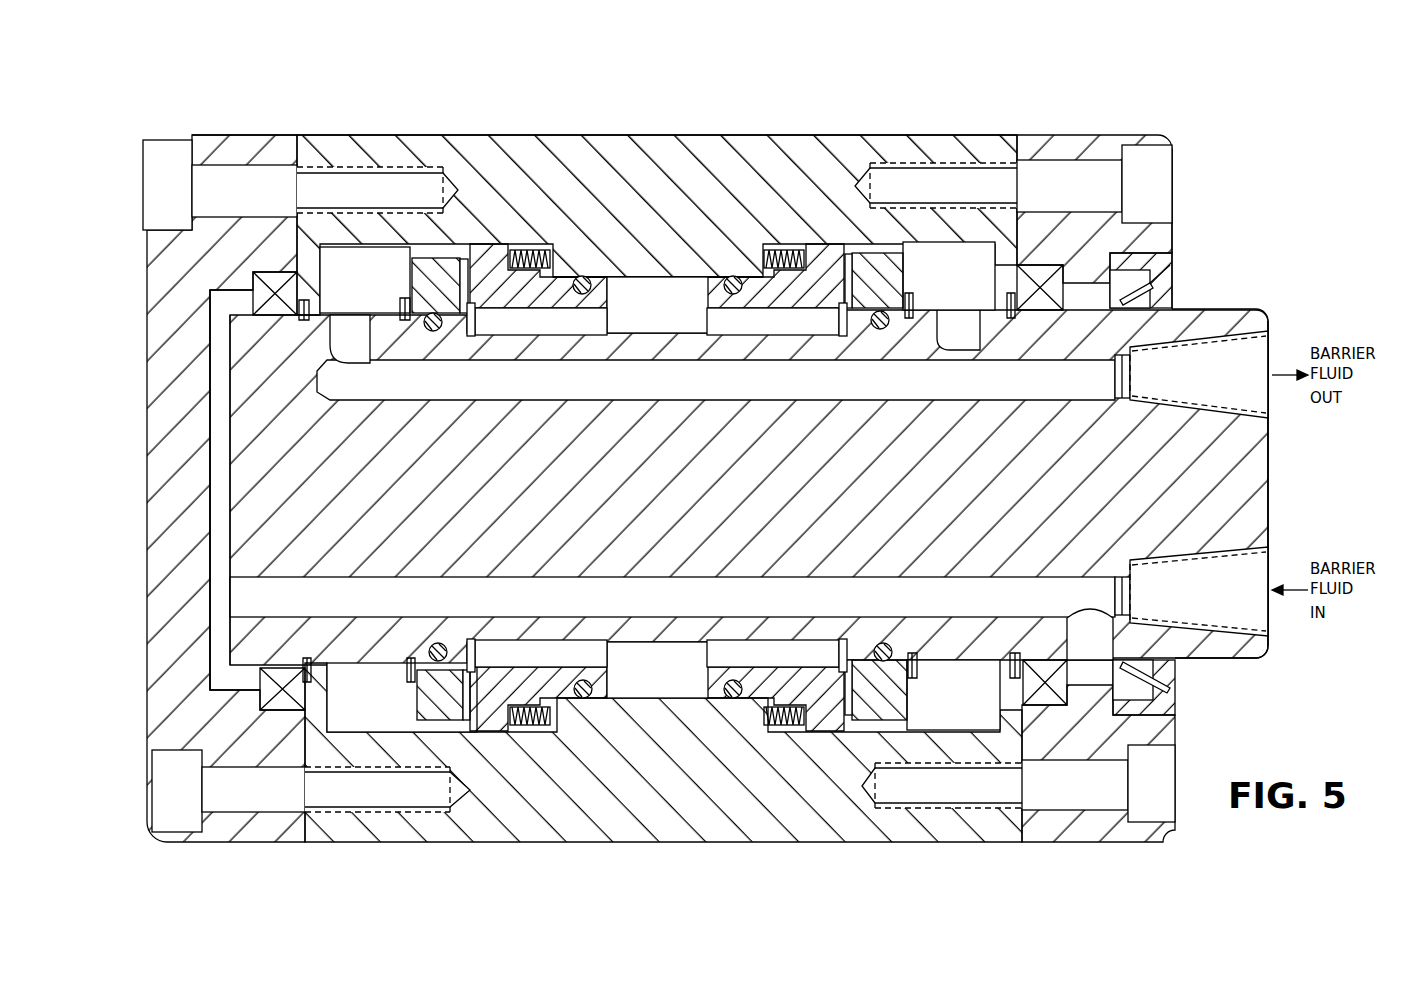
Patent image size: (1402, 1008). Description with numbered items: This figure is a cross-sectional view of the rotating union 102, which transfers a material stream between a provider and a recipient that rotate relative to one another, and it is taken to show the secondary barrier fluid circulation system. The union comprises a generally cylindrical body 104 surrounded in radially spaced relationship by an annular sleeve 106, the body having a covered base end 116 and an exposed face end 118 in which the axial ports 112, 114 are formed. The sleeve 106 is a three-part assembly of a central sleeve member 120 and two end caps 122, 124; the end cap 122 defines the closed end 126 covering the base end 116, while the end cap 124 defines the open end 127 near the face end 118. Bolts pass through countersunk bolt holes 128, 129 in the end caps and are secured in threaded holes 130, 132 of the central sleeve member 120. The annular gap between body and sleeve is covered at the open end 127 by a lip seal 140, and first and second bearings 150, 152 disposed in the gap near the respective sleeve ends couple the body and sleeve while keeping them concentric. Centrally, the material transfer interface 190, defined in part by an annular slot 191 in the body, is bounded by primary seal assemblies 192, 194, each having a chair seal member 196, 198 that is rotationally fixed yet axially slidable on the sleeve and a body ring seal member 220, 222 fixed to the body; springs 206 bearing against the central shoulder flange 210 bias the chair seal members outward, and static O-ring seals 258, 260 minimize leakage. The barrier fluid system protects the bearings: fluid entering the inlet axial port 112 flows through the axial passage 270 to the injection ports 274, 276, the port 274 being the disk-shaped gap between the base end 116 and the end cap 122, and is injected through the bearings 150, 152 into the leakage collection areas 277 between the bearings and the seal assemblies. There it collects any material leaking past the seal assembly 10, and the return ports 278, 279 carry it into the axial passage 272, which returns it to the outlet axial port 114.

The seal assembly 10 is at (648, 279).
The rotating union 102 is at (283, 97).
The body 104 is at (1207, 308).
The sleeve 106 is at (630, 116).
The axial port 112 is at (1197, 582).
The axial port 114 is at (1210, 361).
The base end 116 is at (210, 404).
The face end 118 is at (1280, 455).
The central sleeve member 120 is at (654, 134).
The end cap 122 is at (245, 136).
The end cap 124 is at (1082, 135).
The closed end 126 is at (147, 303).
The open end 127 is at (1172, 232).
The countersunk bolt holes 128 is at (145, 200).
The countersunk bolt holes 129 is at (1108, 205).
The threaded holes 130 is at (368, 168).
The threaded holes 132 is at (872, 165).
The lip seal 140 is at (1172, 268).
The first bearing 150 is at (213, 216).
The second bearing 152 is at (1092, 218).
The material transfer interface 190 is at (642, 317).
The annular slot 191 is at (568, 330).
The primary seal assembly 192 is at (487, 321).
The primary seal assembly 194 is at (827, 320).
The chair seal member 196 is at (488, 255).
The chair seal member 198 is at (845, 250).
The springs 206 is at (525, 250).
The central shoulder flange 210 is at (583, 276).
The body ring seal member 220 is at (277, 277).
The body ring seal member 222 is at (880, 268).
The static O-ring seal 258 is at (433, 272).
The static O-ring seal 260 is at (586, 272).
The axial passage 270 is at (768, 592).
The axial passage 272 is at (730, 377).
The barrier fluid injection port 274 is at (220, 525).
The barrier fluid injection port 276 is at (1072, 640).
The leakage collection areas 277 is at (333, 294).
The barrier fluid return port 278 is at (336, 342).
The barrier fluid return port 279 is at (945, 337).